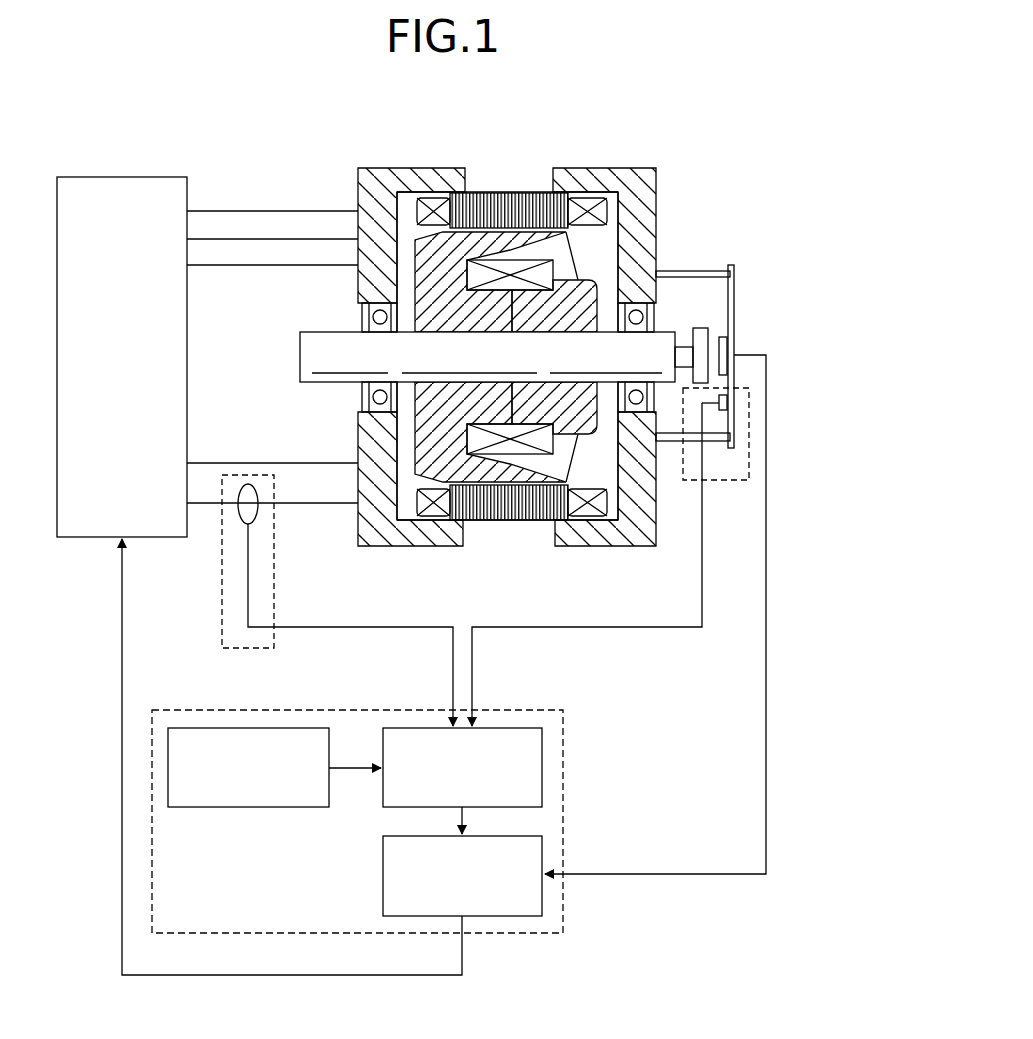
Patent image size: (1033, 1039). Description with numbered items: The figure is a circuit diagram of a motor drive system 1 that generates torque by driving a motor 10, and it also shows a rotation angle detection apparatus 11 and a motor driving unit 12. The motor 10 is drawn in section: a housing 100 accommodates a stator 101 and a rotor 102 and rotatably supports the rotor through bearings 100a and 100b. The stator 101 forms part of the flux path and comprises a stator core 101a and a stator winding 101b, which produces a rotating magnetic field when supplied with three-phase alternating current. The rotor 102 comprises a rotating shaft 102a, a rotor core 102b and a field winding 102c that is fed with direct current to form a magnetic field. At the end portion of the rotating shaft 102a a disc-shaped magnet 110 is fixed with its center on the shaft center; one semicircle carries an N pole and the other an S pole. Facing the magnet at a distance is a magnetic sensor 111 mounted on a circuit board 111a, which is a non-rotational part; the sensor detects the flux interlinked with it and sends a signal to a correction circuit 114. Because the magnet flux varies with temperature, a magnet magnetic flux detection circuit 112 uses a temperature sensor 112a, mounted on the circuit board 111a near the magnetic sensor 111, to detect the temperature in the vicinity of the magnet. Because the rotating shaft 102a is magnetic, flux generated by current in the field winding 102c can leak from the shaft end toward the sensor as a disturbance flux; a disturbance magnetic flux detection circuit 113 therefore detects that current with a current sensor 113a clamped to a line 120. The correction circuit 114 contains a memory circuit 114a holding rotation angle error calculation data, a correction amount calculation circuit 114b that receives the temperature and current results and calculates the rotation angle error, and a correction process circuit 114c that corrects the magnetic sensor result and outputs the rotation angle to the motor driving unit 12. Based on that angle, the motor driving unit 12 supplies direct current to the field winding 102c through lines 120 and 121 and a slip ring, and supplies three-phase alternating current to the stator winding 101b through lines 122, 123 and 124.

The motor drive system 1 is at (679, 88).
The motor 10 is at (445, 168).
The rotation angle detection apparatus 11 is at (653, 548).
The motor driving unit 12 is at (123, 177).
The housing 100 is at (462, 547).
The bearing 100a is at (358, 305).
The bearing 100b is at (652, 305).
The stator 101 is at (492, 315).
The stator core 101a is at (487, 205).
The stator winding 101b is at (433, 202).
The rotor 102 is at (476, 325).
The rotating shaft 102a is at (320, 360).
The rotor core 102b is at (437, 258).
The field winding 102c is at (548, 276).
The magnet 110 is at (703, 340).
The magnetic sensor 111 is at (725, 347).
The circuit board 111a is at (735, 447).
The magnet magnetic flux detection circuit 112 is at (758, 463).
The temperature sensor 112a is at (723, 400).
The disturbance magnetic flux detection circuit 113 is at (297, 600).
The current sensor 113a is at (258, 509).
The correction circuit 114 is at (357, 792).
The memory circuit 114a is at (238, 808).
The correction amount calculation circuit 114b is at (380, 798).
The correction process circuit 114c is at (380, 867).
The line 120 is at (210, 502).
The line 121 is at (258, 462).
The line 122 is at (205, 264).
The line 123 is at (228, 238).
The line 124 is at (263, 210).